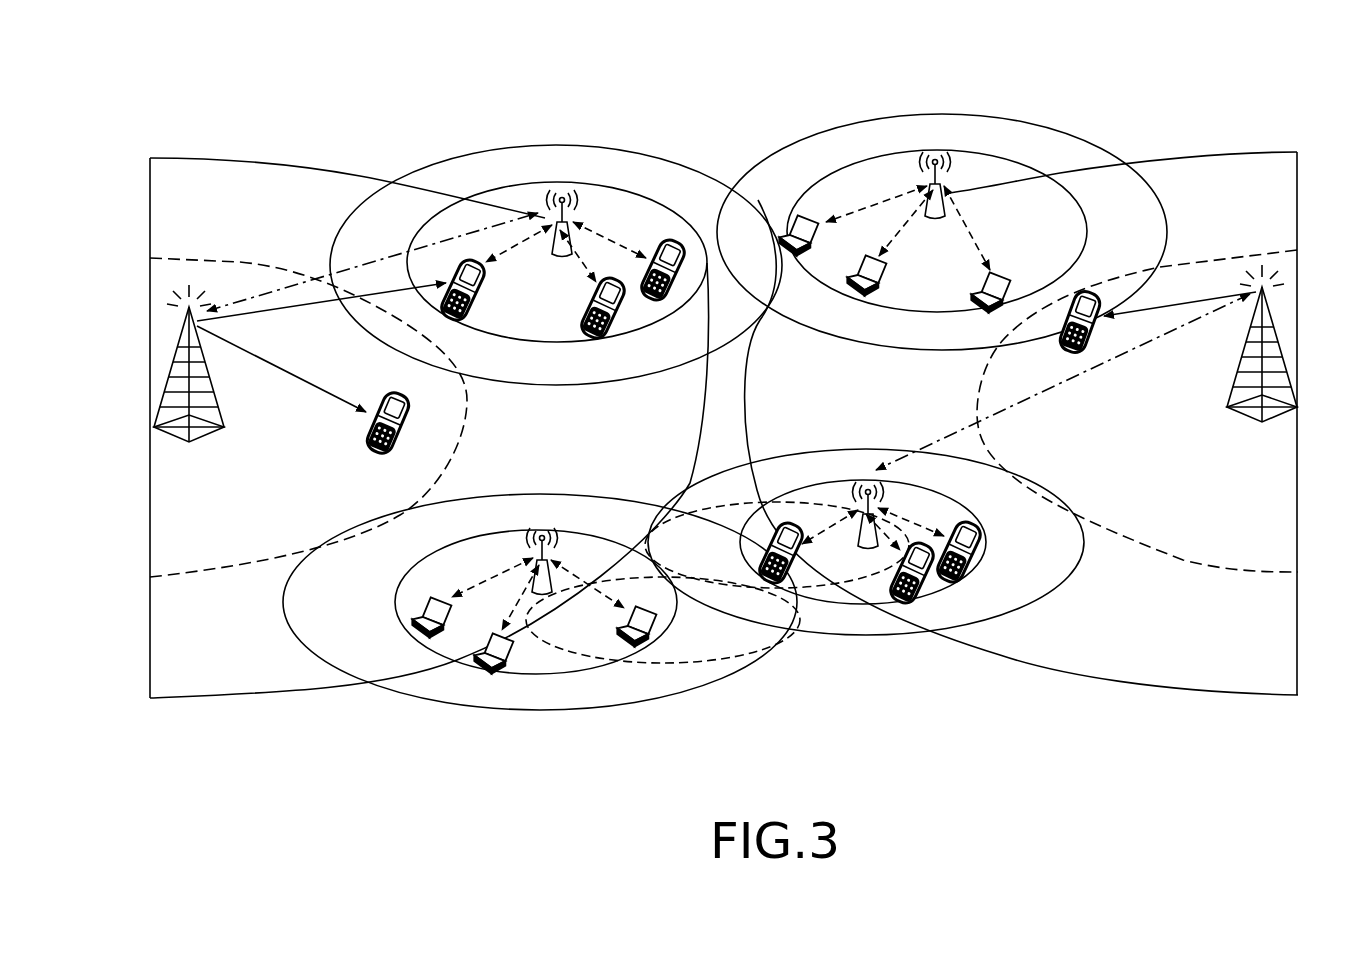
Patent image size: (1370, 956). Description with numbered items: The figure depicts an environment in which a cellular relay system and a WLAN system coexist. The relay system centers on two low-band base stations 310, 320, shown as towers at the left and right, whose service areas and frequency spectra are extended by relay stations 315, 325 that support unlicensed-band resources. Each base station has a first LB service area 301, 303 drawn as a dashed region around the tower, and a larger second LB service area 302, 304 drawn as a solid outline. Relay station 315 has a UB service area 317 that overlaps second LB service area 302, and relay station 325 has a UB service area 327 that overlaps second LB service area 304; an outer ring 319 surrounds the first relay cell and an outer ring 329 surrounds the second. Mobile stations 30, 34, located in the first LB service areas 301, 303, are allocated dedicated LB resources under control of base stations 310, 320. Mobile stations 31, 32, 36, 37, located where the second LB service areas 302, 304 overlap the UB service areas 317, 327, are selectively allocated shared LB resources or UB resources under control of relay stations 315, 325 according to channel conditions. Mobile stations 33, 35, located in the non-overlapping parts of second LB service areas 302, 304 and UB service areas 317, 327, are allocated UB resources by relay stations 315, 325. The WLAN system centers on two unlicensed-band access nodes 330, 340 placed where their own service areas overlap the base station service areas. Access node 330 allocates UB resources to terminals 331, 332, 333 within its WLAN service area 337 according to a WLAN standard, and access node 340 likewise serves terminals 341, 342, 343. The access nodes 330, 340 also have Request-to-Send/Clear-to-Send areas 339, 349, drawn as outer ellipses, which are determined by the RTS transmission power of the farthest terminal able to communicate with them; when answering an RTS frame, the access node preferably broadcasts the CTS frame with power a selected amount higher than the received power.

The mobile station 30 is at (372, 442).
The mobile station 31 is at (466, 262).
The mobile station 32 is at (598, 336).
The mobile station 33 is at (668, 292).
The mobile station 34 is at (1100, 300).
The mobile station 35 is at (787, 582).
The mobile station 36 is at (916, 598).
The mobile station 37 is at (966, 578).
The first LB service area 301 is at (170, 548).
The second LB service area 302 is at (170, 648).
The first LB service area 303 is at (1278, 472).
The second LB service area 304 is at (1278, 637).
The base station 310 is at (172, 366).
The base station 320 is at (1283, 338).
The relay station 315 is at (548, 262).
The UB service area 317 is at (555, 183).
The outer coverage area of relay station 319 is at (645, 146).
The relay station 325 is at (866, 552).
The UB service area 327 is at (893, 606).
The outer coverage area of relay station 329 is at (1040, 602).
The access node 330 is at (553, 595).
The terminal 331 is at (430, 632).
The terminal 332 is at (493, 668).
The terminal 333 is at (640, 648).
The WLAN service area 337 is at (550, 678).
The RTS/CTS area 339 is at (718, 682).
The access node 340 is at (942, 170).
The terminal 341 is at (805, 220).
The terminal 342 is at (868, 258).
The terminal 343 is at (1010, 268).
The RTS/CTS area 349 is at (952, 116).